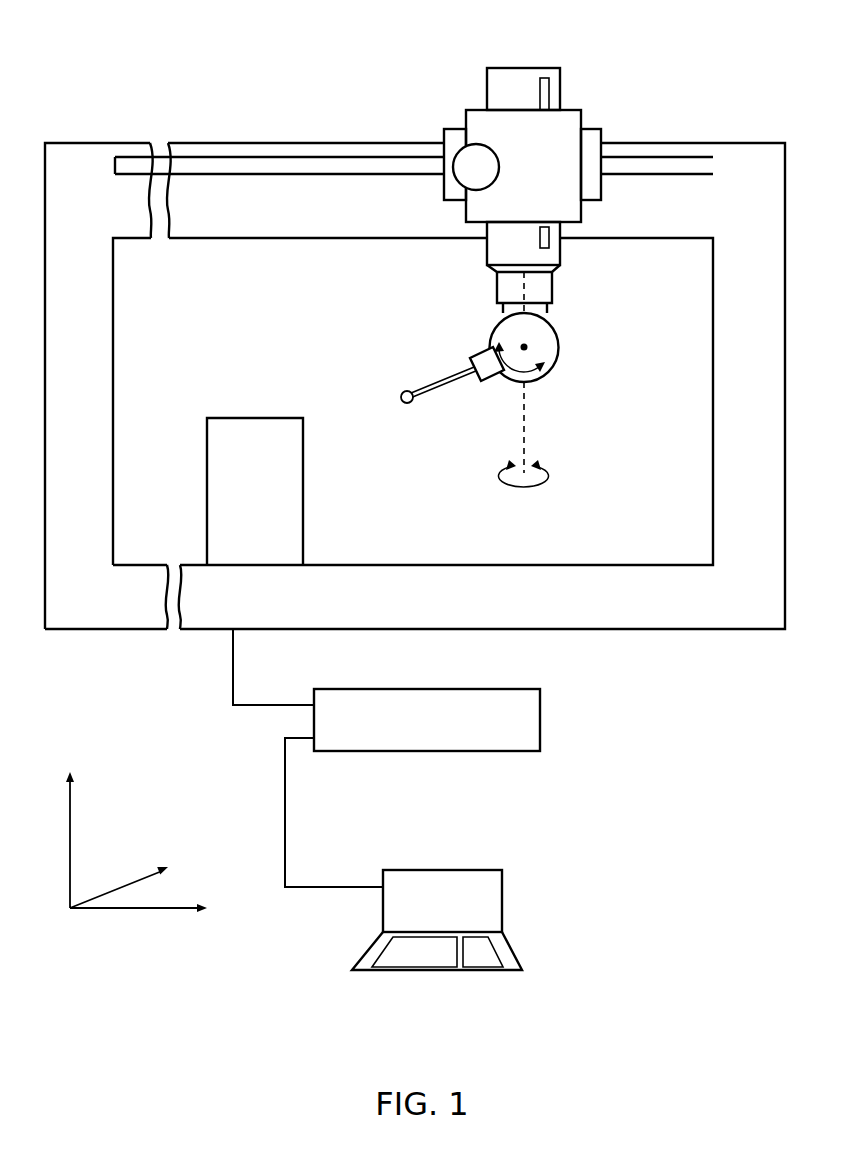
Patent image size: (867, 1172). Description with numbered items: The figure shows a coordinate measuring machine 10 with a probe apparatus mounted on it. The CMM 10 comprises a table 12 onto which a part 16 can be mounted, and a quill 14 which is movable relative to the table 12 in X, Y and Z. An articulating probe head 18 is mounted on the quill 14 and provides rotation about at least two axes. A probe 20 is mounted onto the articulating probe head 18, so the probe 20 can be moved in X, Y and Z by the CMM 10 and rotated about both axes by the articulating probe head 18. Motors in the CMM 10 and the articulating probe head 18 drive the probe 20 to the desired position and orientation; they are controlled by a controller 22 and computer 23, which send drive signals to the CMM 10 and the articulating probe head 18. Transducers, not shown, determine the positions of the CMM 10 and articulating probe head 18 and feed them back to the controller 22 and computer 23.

The coordinate measuring machine 10 is at (280, 98).
The table 12 is at (681, 617).
The quill 14 is at (496, 252).
The part 16 is at (230, 448).
The articulating probe head 18 is at (558, 341).
The probe 20 is at (468, 357).
The controller 22 is at (343, 752).
The computer 23 is at (382, 972).